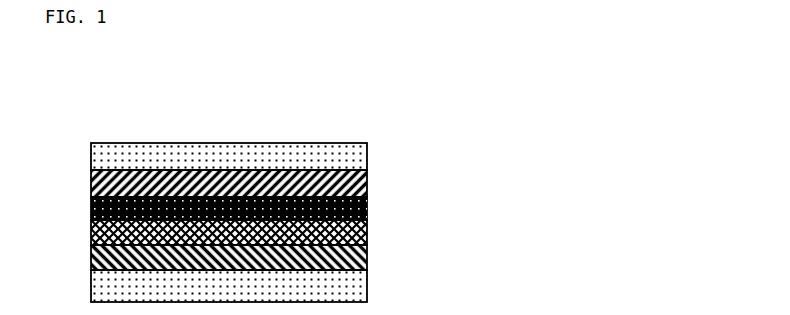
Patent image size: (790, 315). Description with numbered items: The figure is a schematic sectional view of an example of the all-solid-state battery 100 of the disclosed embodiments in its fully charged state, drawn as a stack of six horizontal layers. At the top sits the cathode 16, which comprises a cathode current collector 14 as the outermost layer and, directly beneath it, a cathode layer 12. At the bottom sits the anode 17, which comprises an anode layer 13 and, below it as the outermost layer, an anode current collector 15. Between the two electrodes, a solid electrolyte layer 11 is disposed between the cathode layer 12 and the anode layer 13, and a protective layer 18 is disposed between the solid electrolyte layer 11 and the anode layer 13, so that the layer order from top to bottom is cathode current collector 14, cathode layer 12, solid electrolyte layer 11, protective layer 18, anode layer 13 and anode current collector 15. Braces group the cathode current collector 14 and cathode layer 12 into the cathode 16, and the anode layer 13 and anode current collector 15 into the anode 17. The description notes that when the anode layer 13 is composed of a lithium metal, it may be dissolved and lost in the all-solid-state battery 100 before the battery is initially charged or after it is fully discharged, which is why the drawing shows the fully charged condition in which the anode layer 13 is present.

The all-solid-state battery 100 is at (83, 118).
The cathode current collector 14 is at (368, 154).
The cathode layer 12 is at (368, 173).
The solid electrolyte layer 11 is at (368, 208).
The protective layer 18 is at (368, 232).
The anode layer 13 is at (368, 261).
The anode current collector 15 is at (368, 285).
The cathode 16 is at (433, 138).
The anode 17 is at (433, 248).